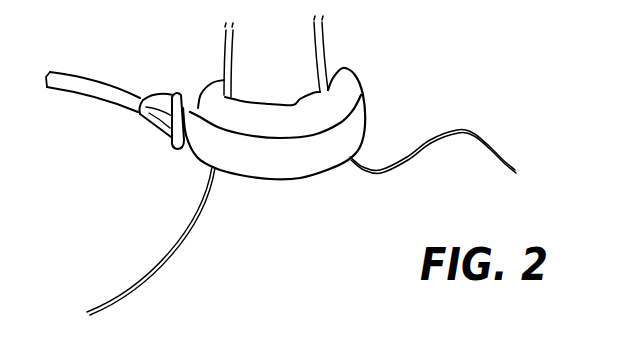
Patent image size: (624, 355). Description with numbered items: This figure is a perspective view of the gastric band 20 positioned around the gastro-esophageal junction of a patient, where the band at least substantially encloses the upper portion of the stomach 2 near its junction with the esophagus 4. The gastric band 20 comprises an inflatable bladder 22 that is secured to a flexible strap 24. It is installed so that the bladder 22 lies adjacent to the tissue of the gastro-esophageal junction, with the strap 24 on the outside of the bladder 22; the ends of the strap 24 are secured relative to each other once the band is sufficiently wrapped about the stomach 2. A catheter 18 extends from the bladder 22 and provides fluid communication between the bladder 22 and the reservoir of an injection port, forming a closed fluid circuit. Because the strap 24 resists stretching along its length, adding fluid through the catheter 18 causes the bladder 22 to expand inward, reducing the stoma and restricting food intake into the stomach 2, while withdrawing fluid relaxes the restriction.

The stomach 2 is at (483, 136).
The esophagus 4 is at (247, 58).
The catheter 18 is at (77, 96).
The gastric band 20 is at (299, 101).
The inflatable bladder 22 is at (338, 90).
The flexible strap 24 is at (365, 118).